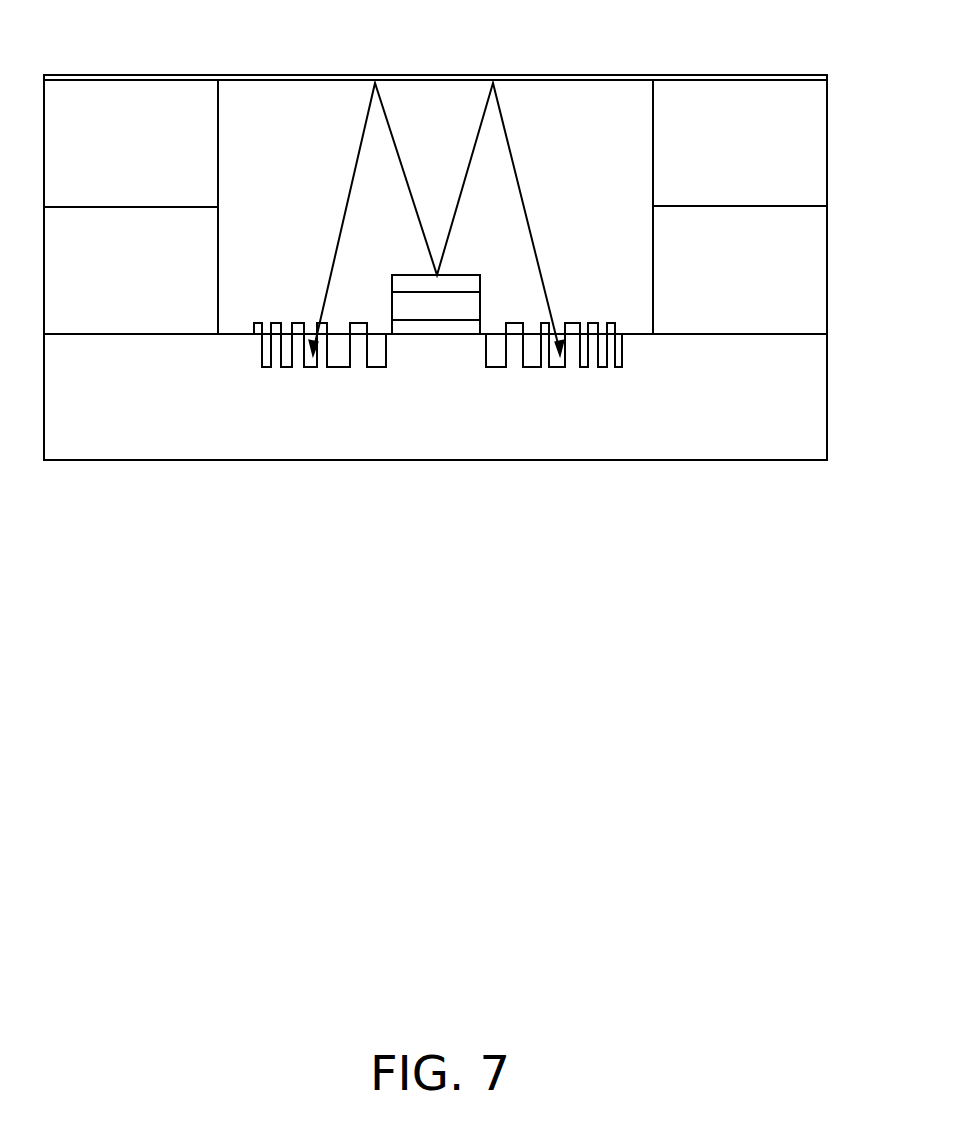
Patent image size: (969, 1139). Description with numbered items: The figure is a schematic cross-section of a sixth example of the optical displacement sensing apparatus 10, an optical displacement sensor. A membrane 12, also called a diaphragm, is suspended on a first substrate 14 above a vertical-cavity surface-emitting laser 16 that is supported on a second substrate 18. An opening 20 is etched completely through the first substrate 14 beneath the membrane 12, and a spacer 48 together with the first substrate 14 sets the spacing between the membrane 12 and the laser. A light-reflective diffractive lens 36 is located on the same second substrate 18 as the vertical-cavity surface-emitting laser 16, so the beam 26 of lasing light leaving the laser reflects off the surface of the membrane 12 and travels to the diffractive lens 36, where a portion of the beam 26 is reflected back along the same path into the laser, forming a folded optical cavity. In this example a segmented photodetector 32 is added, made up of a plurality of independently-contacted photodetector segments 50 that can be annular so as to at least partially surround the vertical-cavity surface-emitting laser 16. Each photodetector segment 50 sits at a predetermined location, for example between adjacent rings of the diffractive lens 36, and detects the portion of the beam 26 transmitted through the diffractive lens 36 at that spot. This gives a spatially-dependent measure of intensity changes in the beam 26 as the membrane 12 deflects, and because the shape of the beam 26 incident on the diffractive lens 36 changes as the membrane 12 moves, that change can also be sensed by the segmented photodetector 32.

The optical displacement sensing apparatus 10 is at (785, 488).
The membrane 12 is at (282, 75).
The first substrate 14 is at (148, 160).
The vertical-cavity surface-emitting laser 16 is at (435, 337).
The second substrate 18 is at (145, 417).
The opening 20 is at (218, 152).
The beam 26 is at (473, 158).
The segmented photodetector 32 is at (252, 360).
The diffractive lens 36 is at (277, 320).
The spacer 48 is at (143, 288).
The photodetector segments 50 is at (408, 390).